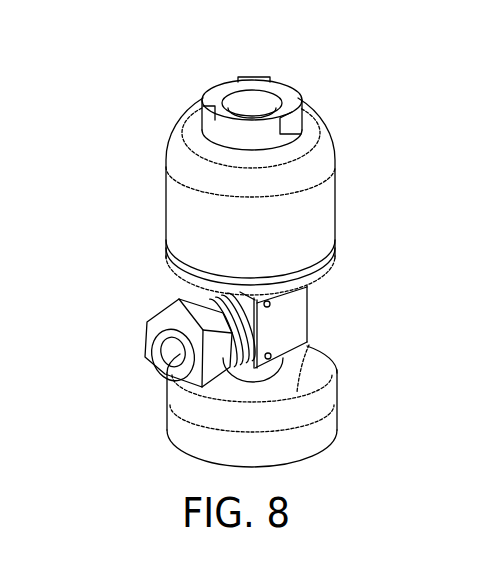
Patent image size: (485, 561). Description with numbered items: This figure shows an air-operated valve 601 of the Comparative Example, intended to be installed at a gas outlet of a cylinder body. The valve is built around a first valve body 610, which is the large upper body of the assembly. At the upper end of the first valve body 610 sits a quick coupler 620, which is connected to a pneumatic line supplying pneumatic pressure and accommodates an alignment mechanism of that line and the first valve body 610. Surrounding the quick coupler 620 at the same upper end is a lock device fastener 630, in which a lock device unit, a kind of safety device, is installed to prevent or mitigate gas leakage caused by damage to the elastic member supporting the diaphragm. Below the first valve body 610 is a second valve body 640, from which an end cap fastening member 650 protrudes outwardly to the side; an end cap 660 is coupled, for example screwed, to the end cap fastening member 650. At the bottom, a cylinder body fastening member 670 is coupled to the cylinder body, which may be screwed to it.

The air-operated valve 601 is at (146, 180).
The first valve body 610 is at (167, 222).
The quick coupler 620 is at (241, 99).
The lock device fastener 630 is at (298, 92).
The second valve body 640 is at (290, 312).
The end cap fastening member 650 is at (152, 355).
The end cap 660 is at (148, 339).
The cylinder body fastening member 670 is at (313, 427).